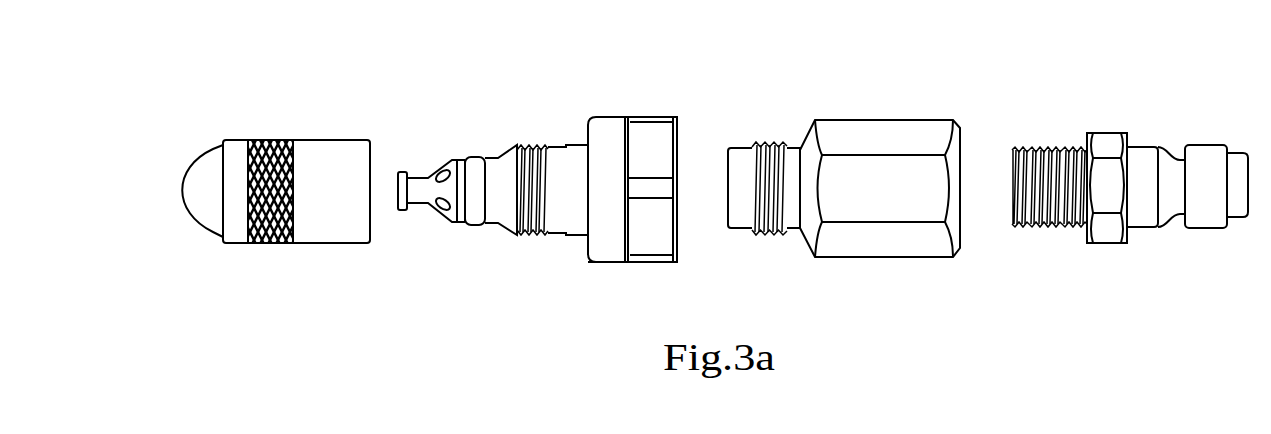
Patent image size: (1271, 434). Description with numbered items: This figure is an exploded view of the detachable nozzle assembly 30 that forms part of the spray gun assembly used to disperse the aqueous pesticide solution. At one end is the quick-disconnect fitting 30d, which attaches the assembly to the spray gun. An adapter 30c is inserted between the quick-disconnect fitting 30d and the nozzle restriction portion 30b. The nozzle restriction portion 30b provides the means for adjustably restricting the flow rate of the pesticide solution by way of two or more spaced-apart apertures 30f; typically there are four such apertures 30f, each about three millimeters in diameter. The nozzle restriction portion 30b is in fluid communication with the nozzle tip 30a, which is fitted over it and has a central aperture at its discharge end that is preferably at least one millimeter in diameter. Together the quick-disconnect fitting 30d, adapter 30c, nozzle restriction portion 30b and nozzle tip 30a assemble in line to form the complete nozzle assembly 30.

The detachable nozzle assembly 30 is at (724, 93).
The nozzle tip 30a is at (313, 150).
The nozzle restriction portion 30b is at (605, 127).
The adapter 30c is at (858, 140).
The quick-disconnect fitting 30d is at (1102, 147).
The spaced-apart apertures 30f is at (436, 223).